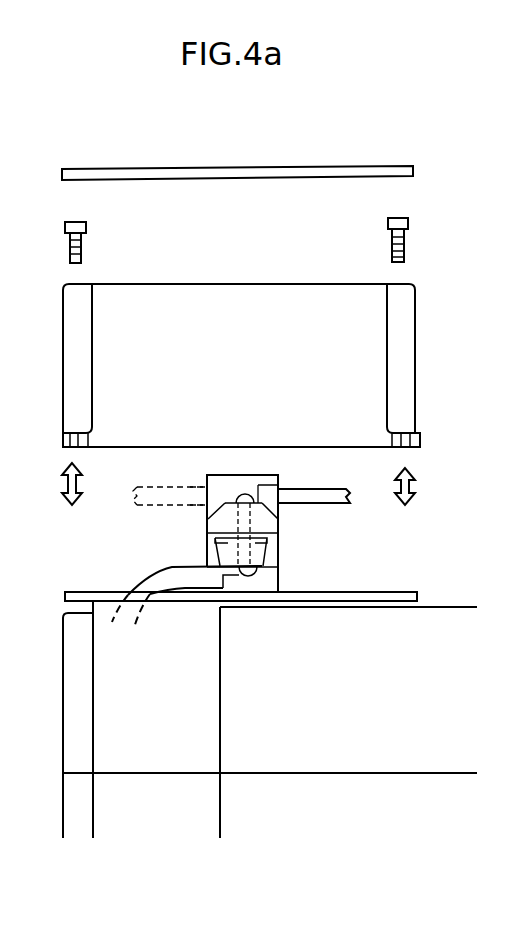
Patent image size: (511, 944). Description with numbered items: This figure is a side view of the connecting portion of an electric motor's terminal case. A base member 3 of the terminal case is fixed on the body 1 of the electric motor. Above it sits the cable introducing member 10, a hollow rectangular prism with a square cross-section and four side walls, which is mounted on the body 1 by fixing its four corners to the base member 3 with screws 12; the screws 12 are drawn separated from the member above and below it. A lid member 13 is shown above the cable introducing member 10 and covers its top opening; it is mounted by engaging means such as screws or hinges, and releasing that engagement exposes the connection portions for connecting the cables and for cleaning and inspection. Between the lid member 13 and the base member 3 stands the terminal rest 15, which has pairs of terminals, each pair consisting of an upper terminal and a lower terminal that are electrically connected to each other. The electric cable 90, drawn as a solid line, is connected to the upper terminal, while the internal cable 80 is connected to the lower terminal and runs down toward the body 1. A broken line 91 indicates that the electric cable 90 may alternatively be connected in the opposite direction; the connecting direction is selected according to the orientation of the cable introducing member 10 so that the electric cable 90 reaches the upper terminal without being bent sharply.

The body 1 is at (315, 638).
The base member 3 is at (393, 590).
The cable introducing member 10 is at (411, 361).
The screws 12 is at (67, 240).
The lid member 13 is at (322, 165).
The terminal rest 15 is at (281, 512).
The internal cable 80 is at (158, 578).
The electric cable 90 is at (309, 488).
The broken line 91 is at (155, 484).